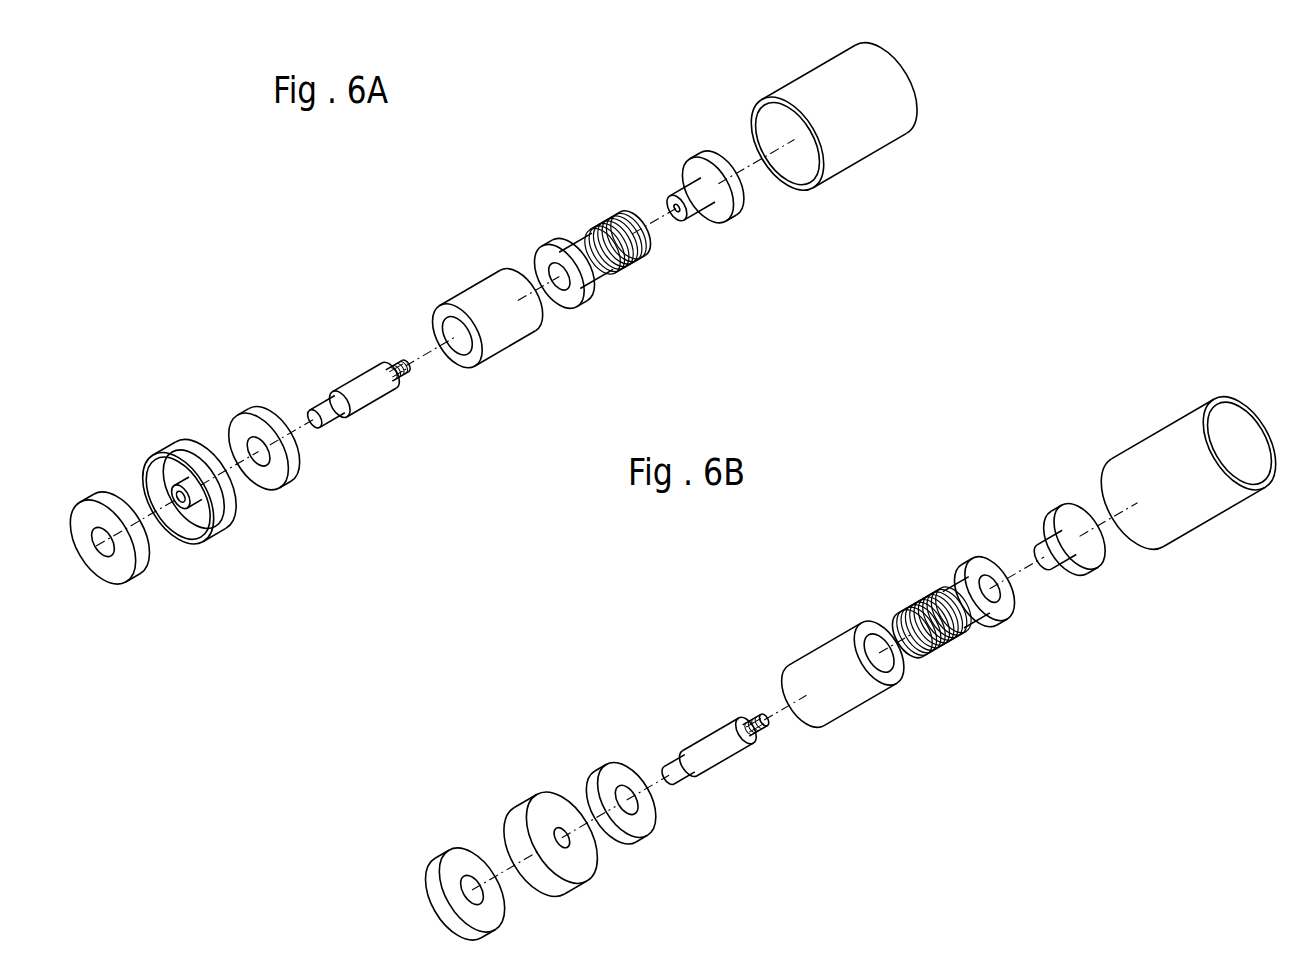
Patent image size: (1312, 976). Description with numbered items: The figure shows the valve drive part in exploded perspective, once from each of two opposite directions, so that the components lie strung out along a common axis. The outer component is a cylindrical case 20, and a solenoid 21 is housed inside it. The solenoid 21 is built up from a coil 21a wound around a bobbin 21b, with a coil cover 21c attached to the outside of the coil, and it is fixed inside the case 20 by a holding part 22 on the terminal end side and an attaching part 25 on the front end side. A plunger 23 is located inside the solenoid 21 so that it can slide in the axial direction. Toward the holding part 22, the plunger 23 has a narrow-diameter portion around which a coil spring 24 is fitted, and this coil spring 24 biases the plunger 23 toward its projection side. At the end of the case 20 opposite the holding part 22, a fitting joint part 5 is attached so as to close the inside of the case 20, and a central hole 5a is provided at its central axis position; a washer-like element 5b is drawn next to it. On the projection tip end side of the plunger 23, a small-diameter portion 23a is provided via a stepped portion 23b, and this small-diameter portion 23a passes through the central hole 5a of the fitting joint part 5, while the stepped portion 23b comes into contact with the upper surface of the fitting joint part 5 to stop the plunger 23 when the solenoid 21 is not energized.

In FIG. 6A, the fitting joint part 5 is at (189, 469).
In FIG. 6B, the fitting joint part 5 is at (557, 812).
In FIG. 6A, the central hole 5a is at (184, 511).
In FIG. 6B, the central hole 5a is at (565, 842).
In FIG. 6A, the rotor washer 5b is at (94, 496).
In FIG. 6B, the rotor washer 5b is at (452, 848).
In FIG. 6A, the case 20 is at (828, 58).
In FIG. 6B, the case 20 is at (1166, 424).
In FIG. 6A, the solenoid 21 is at (588, 240).
In FIG. 6B, the solenoid 21 is at (956, 588).
In FIG. 6A, the coil 21a is at (633, 280).
In FIG. 6B, the coil 21a is at (910, 588).
In FIG. 6A, the bobbin 21b is at (541, 250).
In FIG. 6B, the bobbin 21b is at (984, 591).
In FIG. 6A, the coil cover 21c is at (477, 286).
In FIG. 6B, the coil cover 21c is at (832, 630).
In FIG. 6A, the holding part 22 is at (702, 147).
In FIG. 6B, the holding part 22 is at (1064, 504).
In FIG. 6A, the plunger 23 is at (366, 400).
In FIG. 6B, the plunger 23 is at (710, 749).
In FIG. 6A, the small-diameter portion 23a is at (330, 418).
In FIG. 6B, the small-diameter portion 23a is at (689, 773).
In FIG. 6A, the stepped portion 23b is at (351, 414).
In FIG. 6A, the coil spring 24 is at (399, 358).
In FIG. 6B, the coil spring 24 is at (757, 719).
In FIG. 6A, the attaching part 25 is at (254, 410).
In FIG. 6B, the attaching part 25 is at (611, 762).